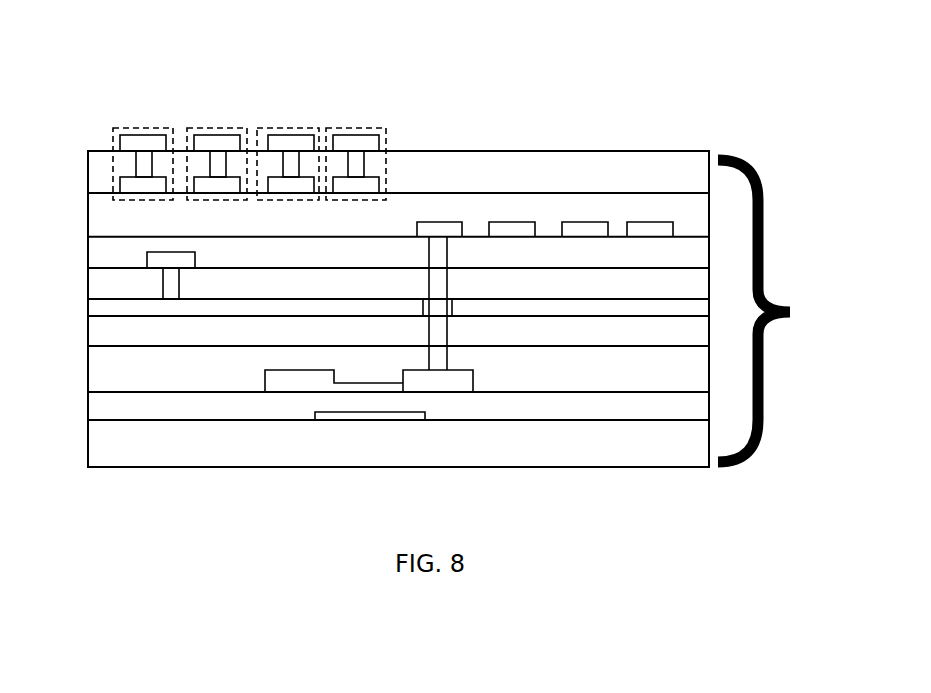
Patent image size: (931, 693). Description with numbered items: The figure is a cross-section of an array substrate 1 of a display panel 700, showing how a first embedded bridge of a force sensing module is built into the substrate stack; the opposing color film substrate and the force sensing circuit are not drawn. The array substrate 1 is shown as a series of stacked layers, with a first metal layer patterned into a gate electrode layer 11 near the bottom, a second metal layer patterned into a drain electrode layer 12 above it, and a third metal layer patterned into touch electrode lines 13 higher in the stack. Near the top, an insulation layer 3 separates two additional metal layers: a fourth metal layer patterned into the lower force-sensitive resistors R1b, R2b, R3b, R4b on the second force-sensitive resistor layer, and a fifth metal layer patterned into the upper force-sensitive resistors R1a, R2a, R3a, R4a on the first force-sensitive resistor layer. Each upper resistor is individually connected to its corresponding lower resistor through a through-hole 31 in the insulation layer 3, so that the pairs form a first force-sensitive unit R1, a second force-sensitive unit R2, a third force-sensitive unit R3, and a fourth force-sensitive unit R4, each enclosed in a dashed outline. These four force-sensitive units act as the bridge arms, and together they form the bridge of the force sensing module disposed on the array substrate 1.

The display panel 700 is at (127, 31).
The array substrate 1 is at (450, 309).
The insulation layer 3 is at (627, 172).
The through-holes 31 is at (135, 166).
The touch electrode lines 13 is at (157, 262).
The drain electrode layer 12 is at (452, 380).
The gate electrode layer 11 is at (410, 416).
The first force-sensitive unit R1 is at (155, 144).
The force-sensitive resistor R1a is at (145, 147).
The force-sensitive resistor R1b is at (147, 185).
The second force-sensitive unit R2 is at (230, 144).
The force-sensitive resistor R2a is at (219, 147).
The force-sensitive resistor R2b is at (221, 185).
The third force-sensitive unit R3 is at (303, 144).
The force-sensitive resistor R3a is at (293, 147).
The force-sensitive resistor R3b is at (295, 185).
The fourth force-sensitive unit R4 is at (369, 144).
The force-sensitive resistor R4a is at (358, 147).
The force-sensitive resistor R4b is at (360, 185).